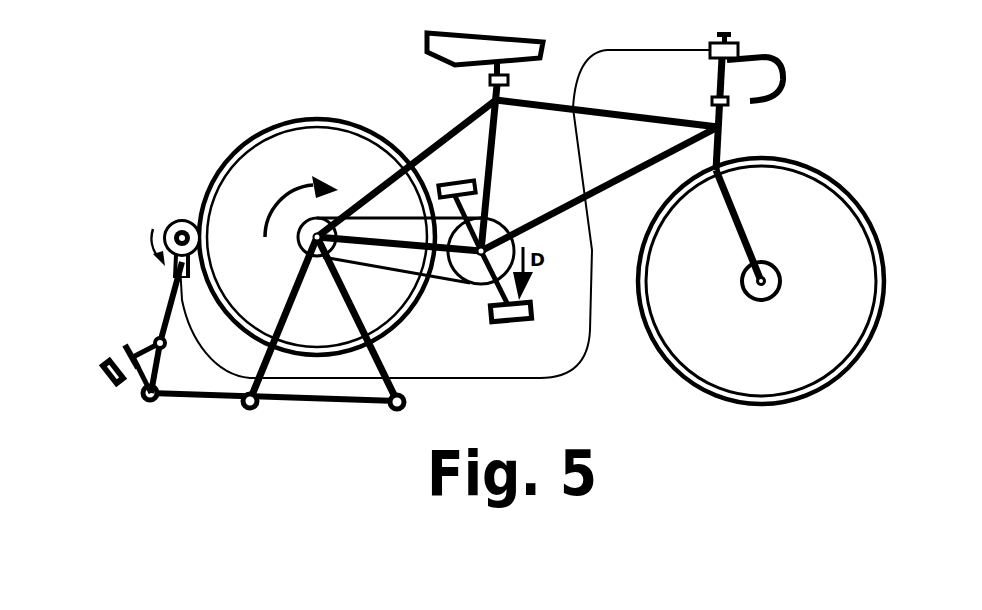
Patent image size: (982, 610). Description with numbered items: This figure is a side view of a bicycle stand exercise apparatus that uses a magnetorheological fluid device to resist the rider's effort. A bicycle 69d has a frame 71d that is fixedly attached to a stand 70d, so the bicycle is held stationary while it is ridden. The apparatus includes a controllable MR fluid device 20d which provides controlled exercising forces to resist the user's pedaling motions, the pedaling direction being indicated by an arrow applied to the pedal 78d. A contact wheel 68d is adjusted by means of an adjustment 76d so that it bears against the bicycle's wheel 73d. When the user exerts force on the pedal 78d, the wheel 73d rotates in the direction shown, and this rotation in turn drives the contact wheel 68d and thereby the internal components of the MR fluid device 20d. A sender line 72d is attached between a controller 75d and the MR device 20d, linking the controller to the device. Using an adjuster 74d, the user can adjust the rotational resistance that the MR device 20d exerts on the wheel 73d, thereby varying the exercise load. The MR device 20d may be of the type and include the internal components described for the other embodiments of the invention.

The controllable MR fluid device 20d is at (136, 222).
The contact wheel 68d is at (170, 220).
The bicycle 69d is at (807, 148).
The stand 70d is at (310, 402).
The frame 71d is at (475, 115).
The sender line 72d is at (573, 378).
The wheel 73d is at (310, 112).
The adjuster 74d is at (733, 35).
The controller 75d is at (740, 50).
The adjustment 76d is at (103, 380).
The pedal 78d is at (510, 320).